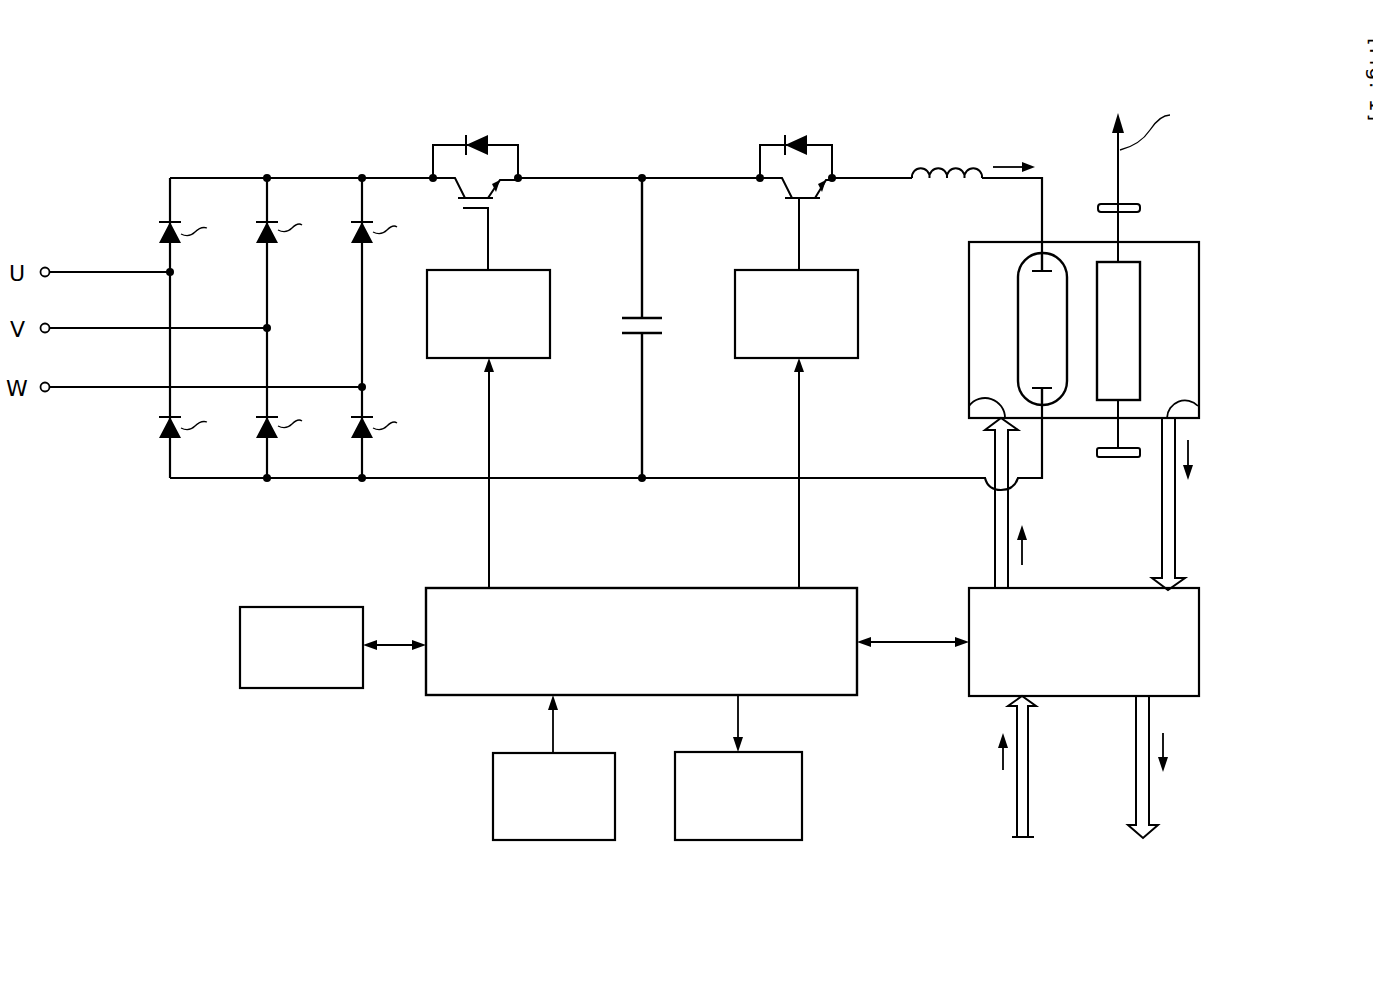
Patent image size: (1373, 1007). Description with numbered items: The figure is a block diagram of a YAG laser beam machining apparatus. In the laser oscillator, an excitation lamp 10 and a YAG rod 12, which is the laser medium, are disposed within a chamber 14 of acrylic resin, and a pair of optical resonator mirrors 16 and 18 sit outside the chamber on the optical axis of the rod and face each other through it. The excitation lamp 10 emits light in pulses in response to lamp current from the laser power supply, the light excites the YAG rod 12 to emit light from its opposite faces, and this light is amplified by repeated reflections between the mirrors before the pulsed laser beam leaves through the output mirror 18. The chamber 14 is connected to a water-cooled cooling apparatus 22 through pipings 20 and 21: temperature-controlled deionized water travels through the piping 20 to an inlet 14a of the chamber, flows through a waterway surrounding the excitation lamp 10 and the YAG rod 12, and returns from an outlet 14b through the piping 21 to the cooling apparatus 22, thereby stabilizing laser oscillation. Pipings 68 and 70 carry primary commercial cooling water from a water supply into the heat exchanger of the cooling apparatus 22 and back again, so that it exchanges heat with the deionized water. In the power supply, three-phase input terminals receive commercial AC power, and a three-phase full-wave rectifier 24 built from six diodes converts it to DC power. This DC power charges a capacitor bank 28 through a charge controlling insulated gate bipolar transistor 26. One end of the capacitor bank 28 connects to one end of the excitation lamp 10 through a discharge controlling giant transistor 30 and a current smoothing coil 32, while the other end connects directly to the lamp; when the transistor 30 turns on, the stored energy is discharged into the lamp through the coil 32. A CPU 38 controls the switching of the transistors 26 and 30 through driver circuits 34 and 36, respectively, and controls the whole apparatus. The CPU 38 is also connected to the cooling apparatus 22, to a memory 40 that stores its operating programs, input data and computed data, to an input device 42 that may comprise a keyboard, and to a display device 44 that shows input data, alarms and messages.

The excitation lamp 10 is at (1018, 334).
The YAG rod 12 is at (1140, 295).
The chamber 14 is at (1199, 370).
The inlet 14a is at (969, 406).
The outlet 14b is at (1175, 412).
The optical resonator mirror 16 is at (1140, 208).
The output mirror 18 is at (1135, 458).
The piping 20 is at (995, 515).
The piping 21 is at (1176, 503).
The cooling apparatus 22 is at (1200, 612).
The three-phase full-wave rectifier 24 is at (302, 190).
The charge controlling insulated gate bipolar transistor 26 is at (500, 158).
The capacitor bank 28 is at (662, 325).
The discharge controlling giant transistor 30 is at (820, 158).
The current smoothing coil 32 is at (947, 170).
The driver circuit 34 is at (525, 270).
The driver circuit 36 is at (833, 270).
The CPU 38 is at (680, 588).
The memory 40 is at (240, 628).
The input device 42 is at (493, 798).
The display device 44 is at (802, 792).
The piping 68 is at (1017, 797).
The piping 70 is at (1150, 797).